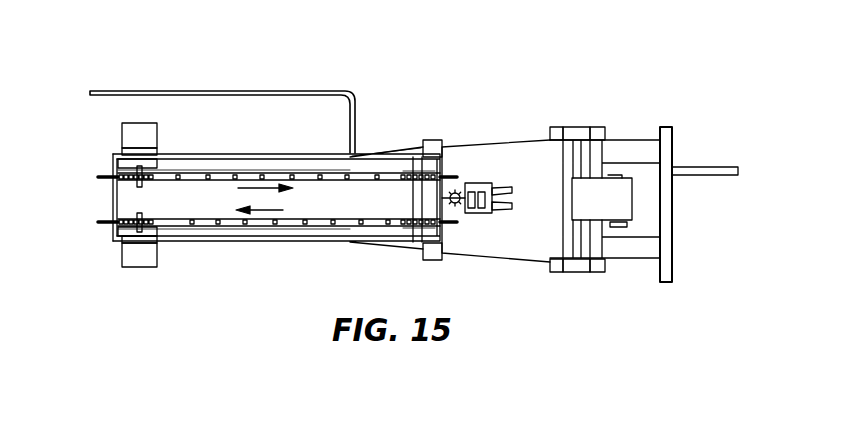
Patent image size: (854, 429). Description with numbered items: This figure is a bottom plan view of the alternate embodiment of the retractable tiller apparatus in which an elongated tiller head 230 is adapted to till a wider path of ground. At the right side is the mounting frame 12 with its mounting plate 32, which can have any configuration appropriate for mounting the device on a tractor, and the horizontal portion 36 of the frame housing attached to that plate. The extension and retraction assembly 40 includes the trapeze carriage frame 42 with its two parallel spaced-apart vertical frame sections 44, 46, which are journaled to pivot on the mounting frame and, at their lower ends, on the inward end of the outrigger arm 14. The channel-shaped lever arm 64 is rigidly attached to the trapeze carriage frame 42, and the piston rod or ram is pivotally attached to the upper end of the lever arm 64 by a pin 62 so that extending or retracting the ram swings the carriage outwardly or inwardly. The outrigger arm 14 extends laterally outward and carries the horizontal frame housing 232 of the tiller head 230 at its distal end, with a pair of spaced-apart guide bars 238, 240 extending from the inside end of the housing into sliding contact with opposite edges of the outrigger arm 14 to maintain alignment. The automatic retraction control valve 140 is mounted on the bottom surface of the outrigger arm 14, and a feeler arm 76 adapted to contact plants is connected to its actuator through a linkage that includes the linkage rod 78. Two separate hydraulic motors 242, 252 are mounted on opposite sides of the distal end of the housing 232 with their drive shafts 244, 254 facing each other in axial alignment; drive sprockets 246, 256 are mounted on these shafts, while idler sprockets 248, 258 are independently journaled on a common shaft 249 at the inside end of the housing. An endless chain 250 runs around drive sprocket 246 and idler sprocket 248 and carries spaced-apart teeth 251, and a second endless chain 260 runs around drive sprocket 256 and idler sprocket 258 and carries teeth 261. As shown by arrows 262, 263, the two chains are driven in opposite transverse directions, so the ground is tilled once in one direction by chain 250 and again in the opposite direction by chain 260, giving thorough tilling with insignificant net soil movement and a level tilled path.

The mounting frame 12 is at (623, 266).
The outrigger arm 14 is at (487, 143).
The mounting plate 32 is at (710, 166).
The horizontal portion 36 is at (625, 140).
The extension and retraction assembly 40 is at (563, 280).
The trapeze carriage frame 42 is at (567, 125).
The vertical frame section 44 is at (577, 126).
The vertical frame section 46 is at (575, 274).
The pin 62 is at (620, 177).
The lever arm 64 is at (608, 215).
The feeler arm 76 is at (229, 91).
The linkage rod 78 is at (458, 192).
The automatic retraction control valve 140 is at (478, 213).
The elongated tiller head 230 is at (118, 277).
The horizontal frame housing 232 is at (203, 155).
The guide bar 238 is at (428, 141).
The guide bar 240 is at (441, 262).
The hydraulic motor 242 is at (120, 135).
The drive shaft 244 is at (115, 160).
The drive sprocket 246 is at (130, 180).
The idler sprocket 248 is at (410, 179).
The common shaft 249 is at (418, 148).
The endless chain 250 is at (333, 173).
The teeth 251 is at (290, 173).
The hydraulic motor 252 is at (144, 268).
The drive shaft 254 is at (124, 231).
The drive sprocket 256 is at (124, 220).
The idler sprocket 258 is at (408, 230).
The endless chain 260 is at (315, 227).
The teeth 261 is at (247, 222).
The arrow 262 is at (253, 190).
The arrow 263 is at (285, 210).